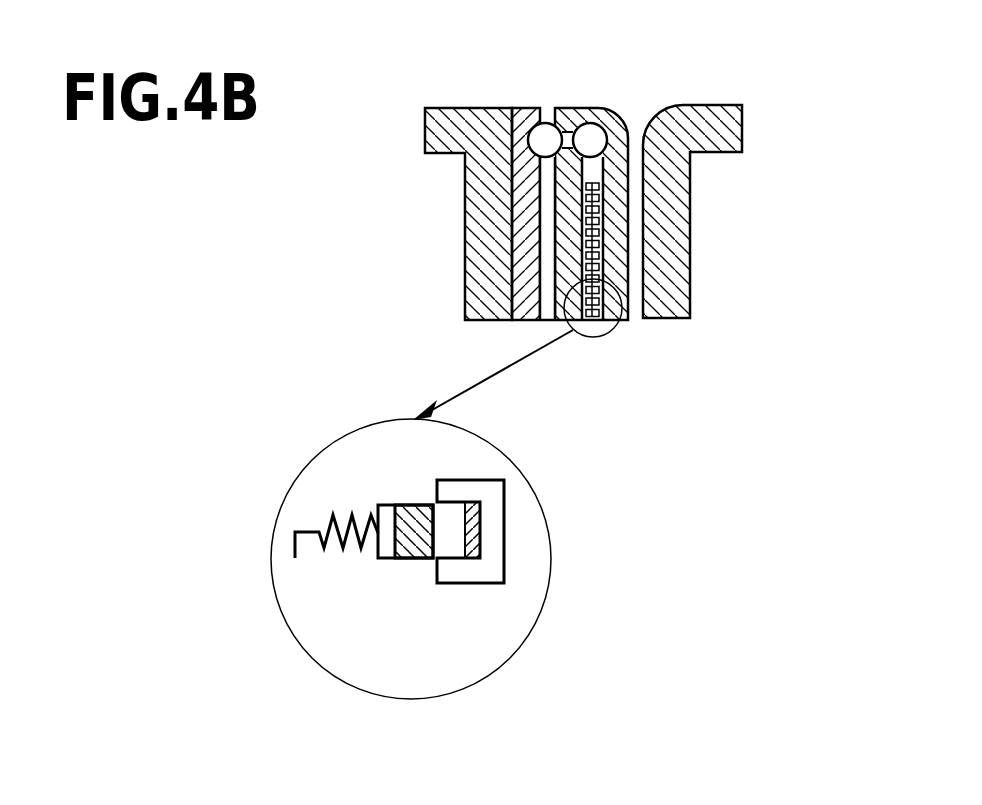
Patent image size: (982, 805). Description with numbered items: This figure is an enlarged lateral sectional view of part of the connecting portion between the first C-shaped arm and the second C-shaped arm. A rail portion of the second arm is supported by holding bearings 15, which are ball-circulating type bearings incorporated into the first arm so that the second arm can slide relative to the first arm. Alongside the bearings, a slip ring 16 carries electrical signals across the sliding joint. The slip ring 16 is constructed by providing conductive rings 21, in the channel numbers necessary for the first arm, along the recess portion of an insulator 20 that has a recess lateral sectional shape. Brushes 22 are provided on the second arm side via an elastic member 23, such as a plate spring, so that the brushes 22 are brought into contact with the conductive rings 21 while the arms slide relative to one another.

The holding bearings 15 is at (585, 137).
The slip ring 16 is at (608, 238).
The insulator 20 is at (467, 481).
The conductive rings 21 is at (471, 517).
The brushes 22 is at (407, 558).
The elastic member 23 is at (340, 556).